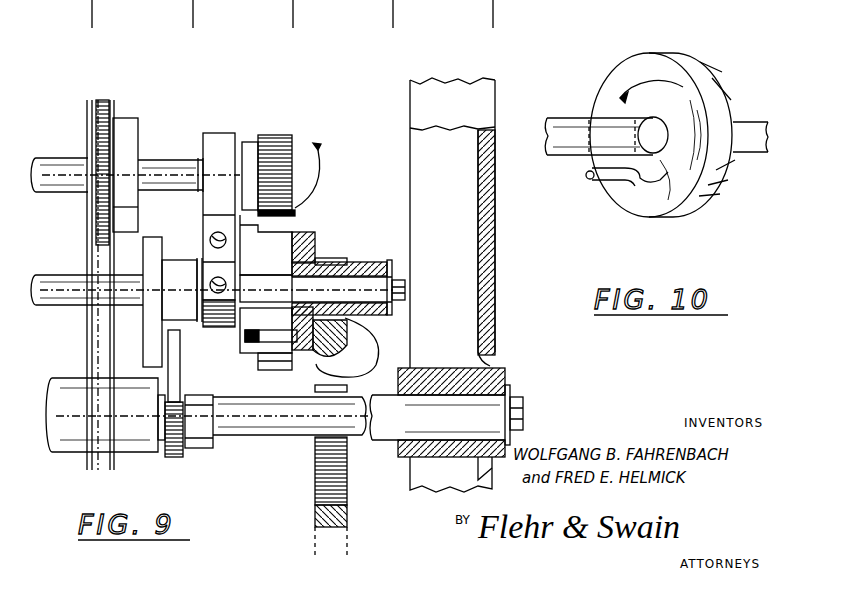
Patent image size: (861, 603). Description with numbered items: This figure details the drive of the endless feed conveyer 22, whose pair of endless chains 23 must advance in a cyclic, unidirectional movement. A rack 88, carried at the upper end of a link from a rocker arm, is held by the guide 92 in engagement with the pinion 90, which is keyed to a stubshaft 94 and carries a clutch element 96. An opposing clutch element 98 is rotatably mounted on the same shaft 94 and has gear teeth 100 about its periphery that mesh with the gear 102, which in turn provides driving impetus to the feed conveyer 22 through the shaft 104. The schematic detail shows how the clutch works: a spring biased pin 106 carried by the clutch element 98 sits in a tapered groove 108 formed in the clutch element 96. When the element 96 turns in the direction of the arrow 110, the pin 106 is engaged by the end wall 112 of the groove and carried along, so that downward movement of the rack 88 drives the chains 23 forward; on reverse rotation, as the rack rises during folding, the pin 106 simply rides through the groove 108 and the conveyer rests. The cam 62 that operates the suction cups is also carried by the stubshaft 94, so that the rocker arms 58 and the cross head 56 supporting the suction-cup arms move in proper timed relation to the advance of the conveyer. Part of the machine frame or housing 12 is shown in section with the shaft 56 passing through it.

In FIG. 9, the housing wall 12 is at (438, 90).
In FIG. 9, the endless feed conveyer 22 is at (111, 97).
In FIG. 9, the endless chains 23 is at (89, 331).
In FIG. 9, the cross head 56 is at (252, 426).
In FIG. 9, the rocker arms 58 is at (176, 366).
In FIG. 9, the cam 62 is at (153, 244).
In FIG. 9, the rack 88 is at (360, 343).
In FIG. 9, the pinion 90 is at (310, 264).
In FIG. 9, the guide 92 is at (352, 368).
In FIG. 9, the stubshaft 94 is at (56, 275).
In FIG. 9, the clutch element 96 is at (305, 240).
In FIG. 10, the clutch element 96 is at (645, 62).
In FIG. 9, the opposing clutch element 98 is at (263, 352).
In FIG. 9, the gear teeth 100 is at (278, 366).
In FIG. 9, the gear 102 is at (273, 143).
In FIG. 9, the shaft 104 is at (169, 165).
In FIG. 9, the spring biased pin 106 is at (286, 328).
In FIG. 10, the spring biased pin 106 is at (587, 181).
In FIG. 10, the tapered groove 108 is at (674, 165).
In FIG. 10, the arrow 110 is at (618, 92).
In FIG. 10, the end wall 112 is at (622, 160).